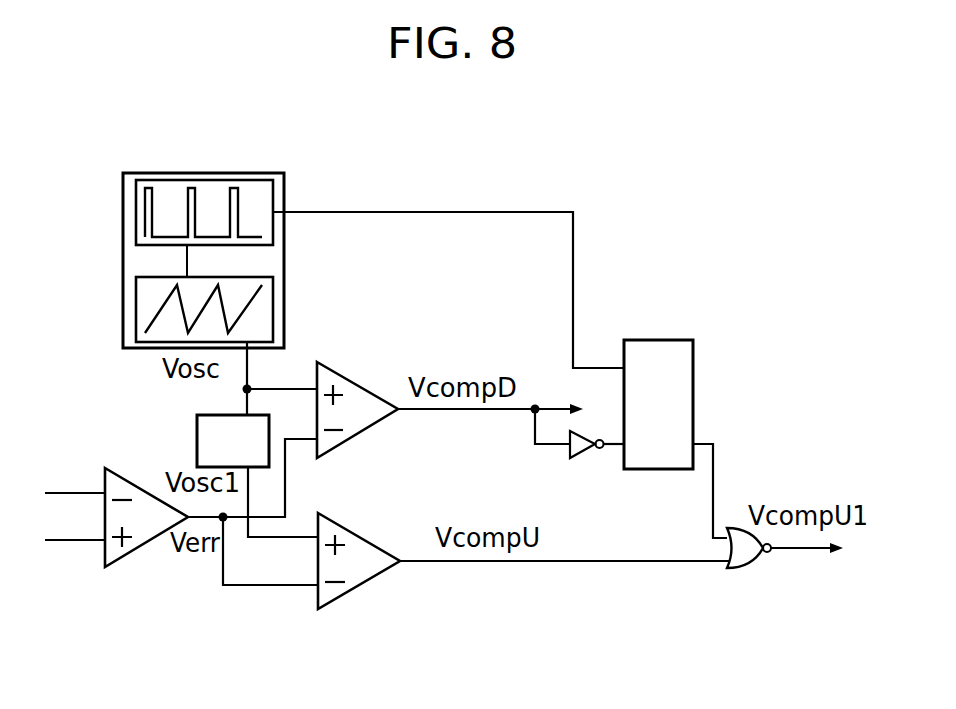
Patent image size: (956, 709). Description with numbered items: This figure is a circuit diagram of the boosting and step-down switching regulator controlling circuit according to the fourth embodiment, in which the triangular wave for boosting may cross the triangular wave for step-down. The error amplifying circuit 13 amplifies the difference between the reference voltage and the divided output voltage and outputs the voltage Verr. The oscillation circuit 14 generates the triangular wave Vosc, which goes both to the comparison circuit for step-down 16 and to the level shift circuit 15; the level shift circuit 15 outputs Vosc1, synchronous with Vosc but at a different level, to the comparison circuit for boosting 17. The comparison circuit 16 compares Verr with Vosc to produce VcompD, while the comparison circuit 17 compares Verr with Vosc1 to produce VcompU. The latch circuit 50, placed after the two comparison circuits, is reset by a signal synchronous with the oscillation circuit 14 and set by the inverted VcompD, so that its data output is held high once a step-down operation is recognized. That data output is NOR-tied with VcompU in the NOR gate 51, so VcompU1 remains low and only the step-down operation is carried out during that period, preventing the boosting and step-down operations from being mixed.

The error amplifying circuit 13 is at (133, 552).
The oscillation circuit 14 is at (285, 297).
The level shift circuit 15 is at (197, 434).
The comparison circuit for step-down 16 is at (355, 435).
The comparison circuit for boosting 17 is at (357, 586).
The latch circuit 50 is at (673, 340).
The NOR gate 51 is at (747, 568).